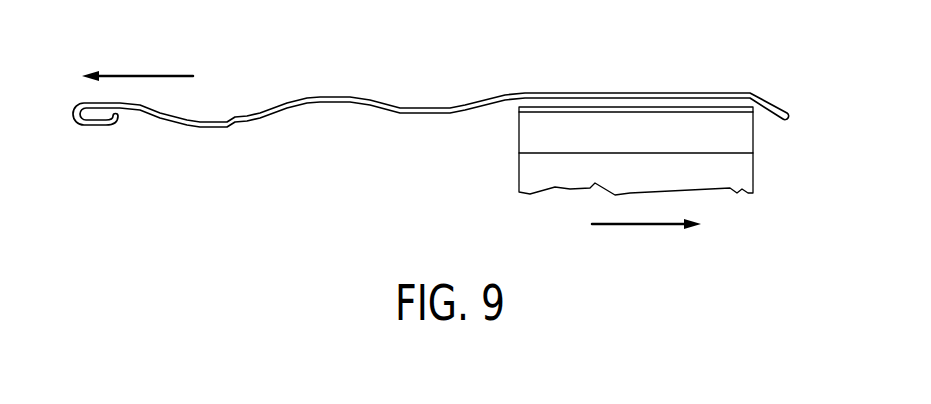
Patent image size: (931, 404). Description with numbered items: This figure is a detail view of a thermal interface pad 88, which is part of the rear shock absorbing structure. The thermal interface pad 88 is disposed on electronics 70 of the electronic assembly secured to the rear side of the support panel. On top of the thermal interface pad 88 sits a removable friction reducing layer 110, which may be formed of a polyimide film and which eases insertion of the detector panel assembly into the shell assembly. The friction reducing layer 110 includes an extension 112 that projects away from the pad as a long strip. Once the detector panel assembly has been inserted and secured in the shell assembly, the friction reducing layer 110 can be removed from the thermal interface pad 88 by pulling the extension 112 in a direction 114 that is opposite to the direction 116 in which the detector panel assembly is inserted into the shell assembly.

The electronics 70 is at (753, 172).
The thermal interface pad 88 is at (753, 130).
The friction reducing layer 110 is at (518, 108).
The extension 112 is at (331, 97).
The direction 114 is at (143, 75).
The direction 116 is at (638, 226).